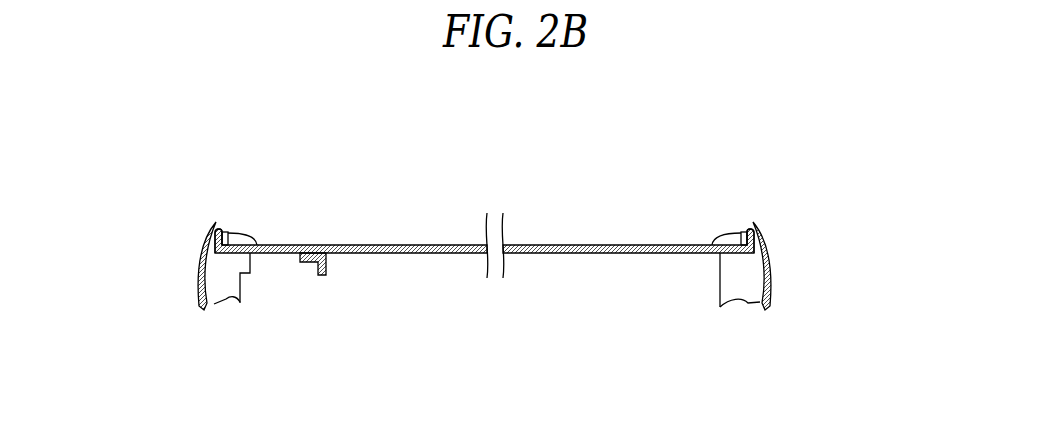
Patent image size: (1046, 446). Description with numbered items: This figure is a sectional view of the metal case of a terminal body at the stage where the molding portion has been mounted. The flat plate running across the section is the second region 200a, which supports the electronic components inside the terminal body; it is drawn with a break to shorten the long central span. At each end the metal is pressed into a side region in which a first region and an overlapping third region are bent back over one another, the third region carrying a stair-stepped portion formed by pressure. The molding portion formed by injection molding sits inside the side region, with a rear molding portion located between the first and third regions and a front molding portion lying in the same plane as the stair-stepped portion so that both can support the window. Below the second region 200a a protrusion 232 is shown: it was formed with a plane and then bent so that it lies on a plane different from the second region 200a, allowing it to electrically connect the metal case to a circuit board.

The second region 200a is at (443, 253).
The protrusion 232 is at (327, 275).